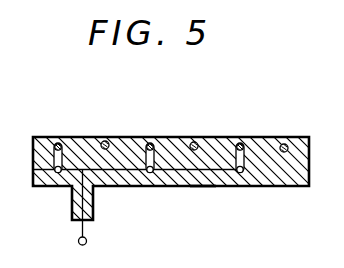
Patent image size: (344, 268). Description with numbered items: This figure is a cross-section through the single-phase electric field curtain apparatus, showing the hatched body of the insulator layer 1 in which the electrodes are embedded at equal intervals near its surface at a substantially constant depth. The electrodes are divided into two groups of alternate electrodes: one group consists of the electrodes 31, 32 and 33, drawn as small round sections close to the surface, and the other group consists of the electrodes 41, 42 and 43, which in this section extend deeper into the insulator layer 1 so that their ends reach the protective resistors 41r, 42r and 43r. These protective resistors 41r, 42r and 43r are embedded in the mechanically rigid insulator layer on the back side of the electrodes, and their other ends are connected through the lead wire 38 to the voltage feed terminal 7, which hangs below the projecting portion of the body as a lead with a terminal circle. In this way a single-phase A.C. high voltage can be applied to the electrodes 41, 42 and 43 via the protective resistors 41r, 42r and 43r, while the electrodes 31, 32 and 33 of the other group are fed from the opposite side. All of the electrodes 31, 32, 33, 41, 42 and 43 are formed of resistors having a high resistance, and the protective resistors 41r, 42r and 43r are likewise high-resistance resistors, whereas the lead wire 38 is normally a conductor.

The insulator layer 1 is at (274, 146).
The voltage feed terminal 7 is at (78, 240).
The electrode 31 is at (285, 144).
The electrode 32 is at (195, 142).
The electrode 33 is at (104, 141).
The lead wire 38 is at (203, 188).
The electrode 41 is at (240, 139).
The protective resistor 41r is at (245, 174).
The electrode 42 is at (151, 136).
The protective resistor 42r is at (150, 174).
The electrode 43 is at (56, 136).
The protective resistor 43r is at (57, 174).